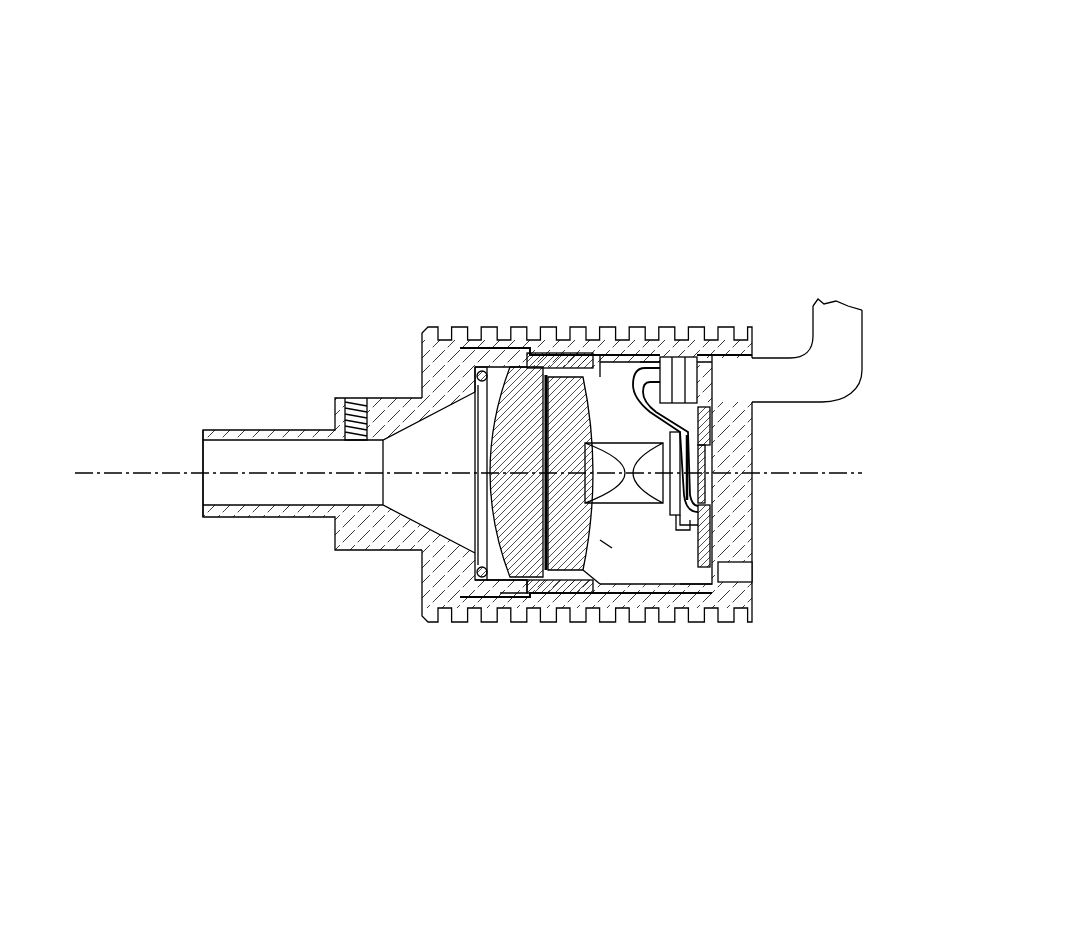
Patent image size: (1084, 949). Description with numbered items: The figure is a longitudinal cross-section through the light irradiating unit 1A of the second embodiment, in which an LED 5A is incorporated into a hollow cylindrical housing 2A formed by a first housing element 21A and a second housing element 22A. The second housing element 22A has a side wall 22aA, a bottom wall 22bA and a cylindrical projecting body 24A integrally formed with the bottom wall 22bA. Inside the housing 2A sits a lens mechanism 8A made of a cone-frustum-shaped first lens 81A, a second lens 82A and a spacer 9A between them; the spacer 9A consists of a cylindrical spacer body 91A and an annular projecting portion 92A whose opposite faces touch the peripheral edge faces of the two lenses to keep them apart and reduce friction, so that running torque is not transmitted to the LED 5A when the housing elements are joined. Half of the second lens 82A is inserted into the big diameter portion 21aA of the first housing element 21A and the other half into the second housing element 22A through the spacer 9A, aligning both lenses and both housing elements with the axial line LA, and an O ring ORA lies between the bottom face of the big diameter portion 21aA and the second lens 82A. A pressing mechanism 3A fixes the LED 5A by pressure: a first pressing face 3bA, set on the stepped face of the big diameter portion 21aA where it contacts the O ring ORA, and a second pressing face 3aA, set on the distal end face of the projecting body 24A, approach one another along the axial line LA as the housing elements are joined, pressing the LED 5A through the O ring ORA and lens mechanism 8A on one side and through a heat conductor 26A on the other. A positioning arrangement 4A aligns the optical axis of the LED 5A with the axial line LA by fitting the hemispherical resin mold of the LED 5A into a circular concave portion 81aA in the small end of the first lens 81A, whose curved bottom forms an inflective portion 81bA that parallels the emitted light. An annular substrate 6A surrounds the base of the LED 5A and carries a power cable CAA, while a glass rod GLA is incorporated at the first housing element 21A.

The light irradiating unit 1A is at (608, 193).
The housing 2A is at (538, 190).
The first housing element 21A is at (432, 316).
The second housing element 22A is at (516, 316).
The big diameter portion 21aA is at (476, 380).
The side wall 22aA is at (648, 363).
The bottom wall 22bA is at (697, 598).
The pressing mechanism 3A is at (584, 642).
The second pressing face 3aA is at (706, 488).
The first pressing face 3bA is at (482, 540).
The positioning arrangement 4A is at (748, 553).
The LED 5A is at (638, 436).
The annular substrate 6A is at (705, 400).
The lens mechanism 8A is at (598, 722).
The first lens 81A is at (580, 592).
The concave portion 81aA is at (580, 352).
The inflective portion 81bA is at (572, 566).
The second lens 82A is at (497, 596).
The spacer 9A is at (768, 716).
The spacer body 91A is at (588, 540).
The projecting portion 92A is at (612, 548).
The projecting body 24A is at (705, 446).
The heat conductor 26A is at (706, 470).
The power cable CAA is at (826, 304).
The glass rod GLA is at (203, 465).
The axial line LA is at (487, 474).
The O ring ORA is at (480, 577).